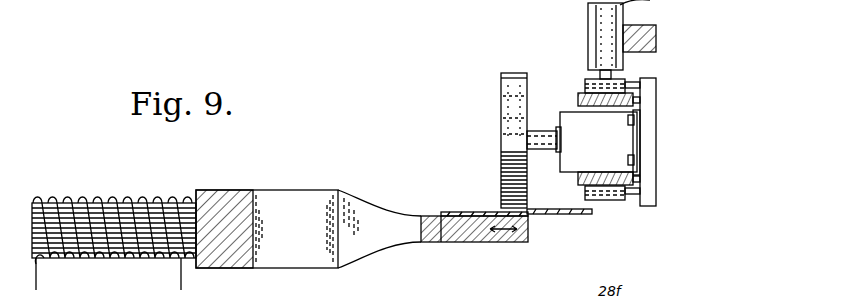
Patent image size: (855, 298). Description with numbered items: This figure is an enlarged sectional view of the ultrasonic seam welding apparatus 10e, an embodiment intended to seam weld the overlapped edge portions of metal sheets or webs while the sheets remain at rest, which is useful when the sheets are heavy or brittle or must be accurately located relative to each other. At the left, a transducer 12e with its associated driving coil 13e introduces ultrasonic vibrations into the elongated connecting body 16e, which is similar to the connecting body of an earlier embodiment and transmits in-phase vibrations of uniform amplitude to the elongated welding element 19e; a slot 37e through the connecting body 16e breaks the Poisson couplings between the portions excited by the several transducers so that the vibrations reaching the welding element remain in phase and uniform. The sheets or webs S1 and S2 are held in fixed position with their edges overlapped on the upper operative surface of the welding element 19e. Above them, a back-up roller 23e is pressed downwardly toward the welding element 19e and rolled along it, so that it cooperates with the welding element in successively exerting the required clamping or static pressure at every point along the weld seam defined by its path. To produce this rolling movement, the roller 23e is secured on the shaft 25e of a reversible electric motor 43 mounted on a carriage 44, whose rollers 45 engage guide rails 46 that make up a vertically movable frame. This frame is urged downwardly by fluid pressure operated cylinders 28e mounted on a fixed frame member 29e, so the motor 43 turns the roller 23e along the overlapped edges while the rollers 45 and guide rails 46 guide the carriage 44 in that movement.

The ultrasonic seam welding apparatus 10e is at (451, 145).
The transducers 12e is at (88, 258).
The driving coil 13e is at (122, 258).
The connecting body 16e is at (343, 176).
The slot 37e is at (277, 258).
The welding element 19e is at (467, 242).
The sheet or web S1 is at (474, 212).
The sheet or web S2 is at (580, 215).
The back-up roller 23e is at (507, 107).
The shaft 25e is at (546, 128).
The reversible electric motor 43 is at (570, 170).
The carriage 44 is at (650, 125).
The rollers 45 is at (620, 80).
The guide rails 46 is at (636, 100).
The fluid pressure operated cylinders 28e is at (588, 26).
The fixed frame member 29e is at (657, 34).